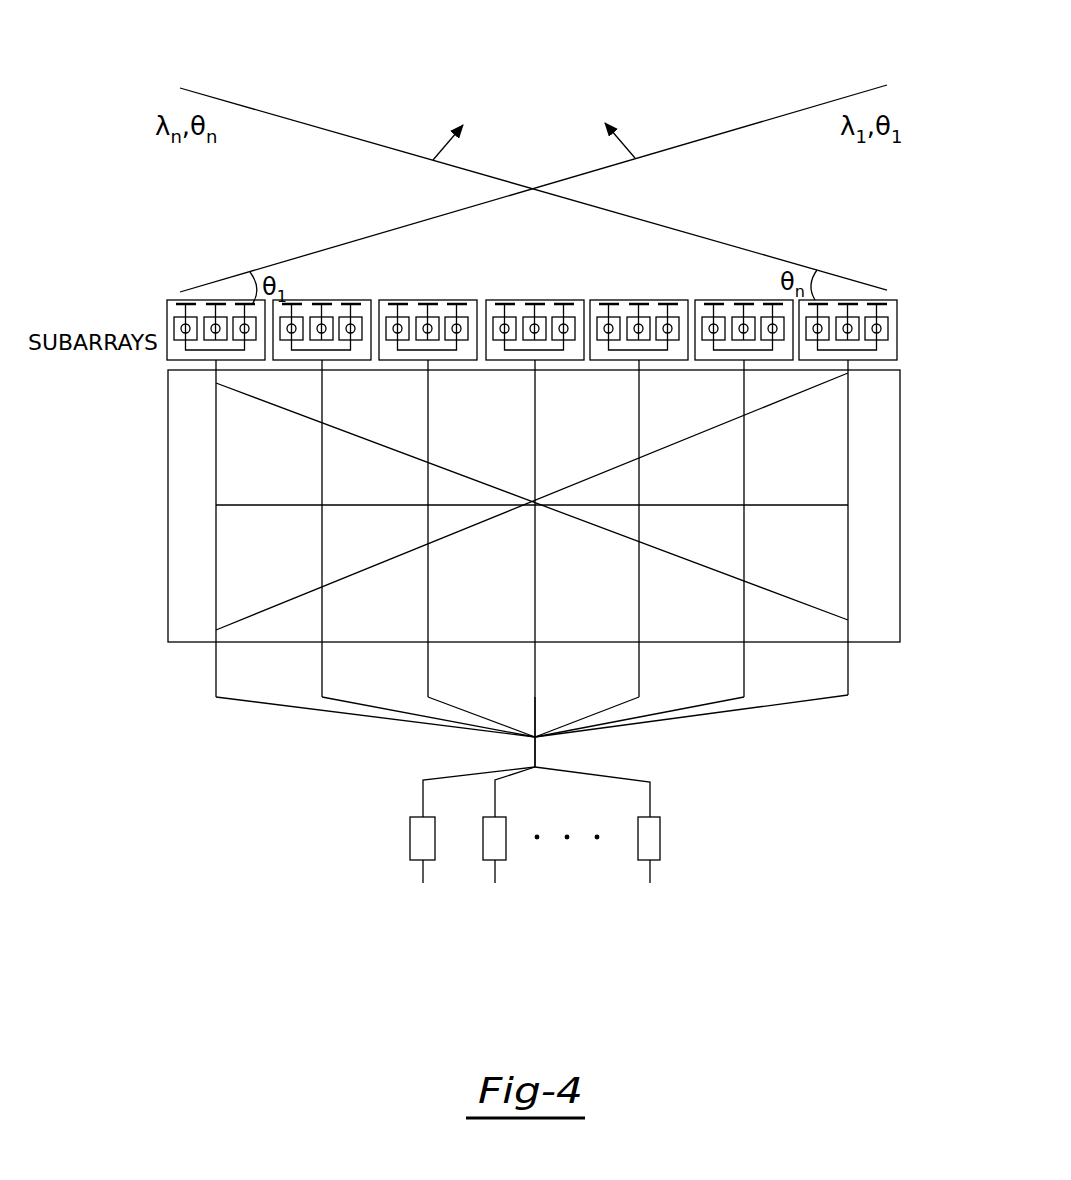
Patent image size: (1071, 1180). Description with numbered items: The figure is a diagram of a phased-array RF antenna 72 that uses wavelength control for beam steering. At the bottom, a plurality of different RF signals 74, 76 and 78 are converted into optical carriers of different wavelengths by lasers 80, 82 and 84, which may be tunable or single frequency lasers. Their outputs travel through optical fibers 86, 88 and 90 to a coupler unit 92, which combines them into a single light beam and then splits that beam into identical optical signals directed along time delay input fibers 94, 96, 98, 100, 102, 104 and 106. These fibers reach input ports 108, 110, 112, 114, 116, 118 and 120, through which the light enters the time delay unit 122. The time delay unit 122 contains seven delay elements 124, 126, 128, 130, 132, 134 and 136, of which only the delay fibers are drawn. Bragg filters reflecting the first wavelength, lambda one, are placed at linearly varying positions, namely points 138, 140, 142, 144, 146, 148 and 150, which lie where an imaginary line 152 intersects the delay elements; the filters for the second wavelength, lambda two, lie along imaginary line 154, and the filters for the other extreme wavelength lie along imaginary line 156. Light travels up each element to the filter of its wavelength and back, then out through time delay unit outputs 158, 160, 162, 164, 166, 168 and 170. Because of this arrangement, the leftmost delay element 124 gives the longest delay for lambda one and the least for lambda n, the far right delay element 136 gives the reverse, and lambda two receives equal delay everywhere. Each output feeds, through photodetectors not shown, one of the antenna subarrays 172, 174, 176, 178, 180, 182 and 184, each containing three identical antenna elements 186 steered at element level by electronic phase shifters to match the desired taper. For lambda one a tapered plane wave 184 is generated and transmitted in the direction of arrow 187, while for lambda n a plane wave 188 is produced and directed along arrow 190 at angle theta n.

The RF array antenna 72 is at (696, 74).
The RF signal 74 is at (423, 868).
The RF signal 76 is at (495, 868).
The RF signal 78 is at (652, 868).
The laser 80 is at (410, 822).
The laser 82 is at (506, 845).
The laser 84 is at (660, 838).
The optical fiber 86 is at (433, 780).
The optical fiber 88 is at (507, 778).
The optical fiber 90 is at (625, 778).
The coupler unit 92 is at (537, 740).
The time delay input fiber 94 is at (218, 672).
The time delay input fiber 96 is at (323, 670).
The time delay input fiber 98 is at (429, 672).
The time delay input fiber 100 is at (536, 678).
The time delay input fiber 102 is at (641, 668).
The time delay input fiber 104 is at (745, 668).
The time delay input fiber 106 is at (848, 680).
The input port 108 is at (218, 640).
The input port 110 is at (323, 640).
The input port 112 is at (429, 640).
The input port 114 is at (536, 638).
The input port 116 is at (641, 632).
The input port 118 is at (742, 637).
The input port 120 is at (853, 643).
The time delay unit 122 is at (152, 610).
The delay element 124 is at (217, 462).
The delay element 126 is at (323, 447).
The delay element 128 is at (430, 443).
The delay element 130 is at (536, 458).
The delay element 132 is at (641, 478).
The delay element 134 is at (745, 448).
The delay element 136 is at (848, 450).
The λ1 Bragg filter point 138 is at (220, 387).
The λ1 Bragg filter point 140 is at (328, 422).
The λ1 Bragg filter point 142 is at (428, 465).
The λ1 Bragg filter point 144 is at (534, 512).
The λ1 Bragg filter point 146 is at (640, 546).
The λ1 Bragg filter point 148 is at (738, 583).
The λ1 Bragg filter point 150 is at (848, 620).
The imaginary line 152 is at (555, 517).
The imaginary line 154 is at (228, 512).
The imaginary line 156 is at (360, 570).
The time delay unit output 158 is at (217, 371).
The time delay unit output 160 is at (323, 371).
The time delay unit output 162 is at (429, 372).
The time delay unit output 164 is at (543, 372).
The time delay unit output 166 is at (647, 372).
The time delay unit output 168 is at (745, 372).
The time delay unit output 170 is at (845, 373).
The antenna subarray 172 is at (215, 286).
The antenna subarray 174 is at (334, 286).
The antenna subarray 176 is at (458, 286).
The antenna subarray 178 is at (538, 286).
The antenna subarray 180 is at (624, 288).
The antenna subarray 182 is at (730, 286).
The plane wave 184 is at (733, 128).
The antenna element 186 is at (167, 323).
The direction arrow 187 is at (617, 143).
The plane wave 188 is at (210, 93).
The direction arrow 190 is at (447, 140).